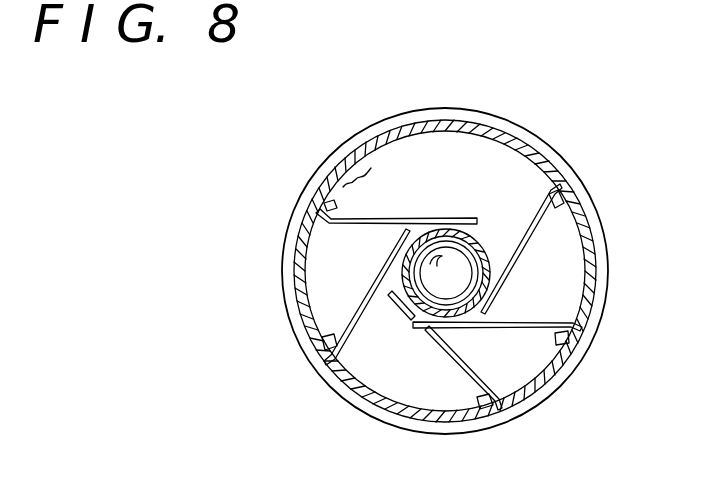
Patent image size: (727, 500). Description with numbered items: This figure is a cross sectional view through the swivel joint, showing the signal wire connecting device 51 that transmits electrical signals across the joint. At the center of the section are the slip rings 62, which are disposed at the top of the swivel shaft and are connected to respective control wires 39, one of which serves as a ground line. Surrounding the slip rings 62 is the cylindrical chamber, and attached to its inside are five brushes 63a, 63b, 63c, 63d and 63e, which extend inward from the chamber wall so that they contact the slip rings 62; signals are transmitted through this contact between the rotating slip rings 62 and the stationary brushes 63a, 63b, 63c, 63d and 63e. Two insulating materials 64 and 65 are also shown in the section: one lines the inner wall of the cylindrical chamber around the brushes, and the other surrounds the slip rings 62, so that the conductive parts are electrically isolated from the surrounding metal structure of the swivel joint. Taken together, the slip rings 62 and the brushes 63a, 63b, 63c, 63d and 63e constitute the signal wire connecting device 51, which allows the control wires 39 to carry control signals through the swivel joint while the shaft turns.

The signal wire connecting device 51 is at (528, 111).
The insulating material 64 is at (398, 133).
The insulating material 65 is at (479, 246).
The slip rings 62 is at (475, 241).
The brush 63a is at (517, 259).
The brush 63b is at (522, 327).
The brush 63c is at (468, 370).
The brush 63d is at (365, 305).
The brush 63e is at (407, 217).
The control wires 39 is at (403, 300).